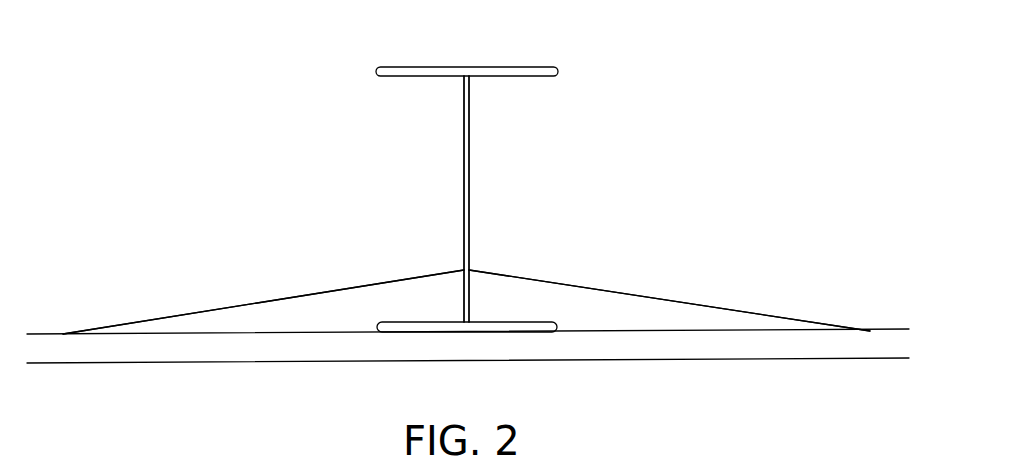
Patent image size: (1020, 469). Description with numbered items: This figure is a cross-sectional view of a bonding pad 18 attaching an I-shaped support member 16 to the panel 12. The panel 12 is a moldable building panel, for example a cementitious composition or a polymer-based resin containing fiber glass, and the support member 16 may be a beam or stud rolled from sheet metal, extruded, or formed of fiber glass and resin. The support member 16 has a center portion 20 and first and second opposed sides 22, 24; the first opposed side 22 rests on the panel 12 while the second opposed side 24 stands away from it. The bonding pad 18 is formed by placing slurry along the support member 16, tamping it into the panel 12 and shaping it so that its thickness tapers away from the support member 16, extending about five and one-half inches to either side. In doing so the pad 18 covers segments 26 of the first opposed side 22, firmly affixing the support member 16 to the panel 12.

The panel 12 is at (675, 347).
The support member 16 is at (566, 132).
The bonding pad 18 is at (607, 310).
The center portion 20 is at (463, 192).
The first opposed side 22 is at (525, 327).
The second opposed side 24 is at (425, 67).
The segments of the first opposed side 26 is at (408, 322).